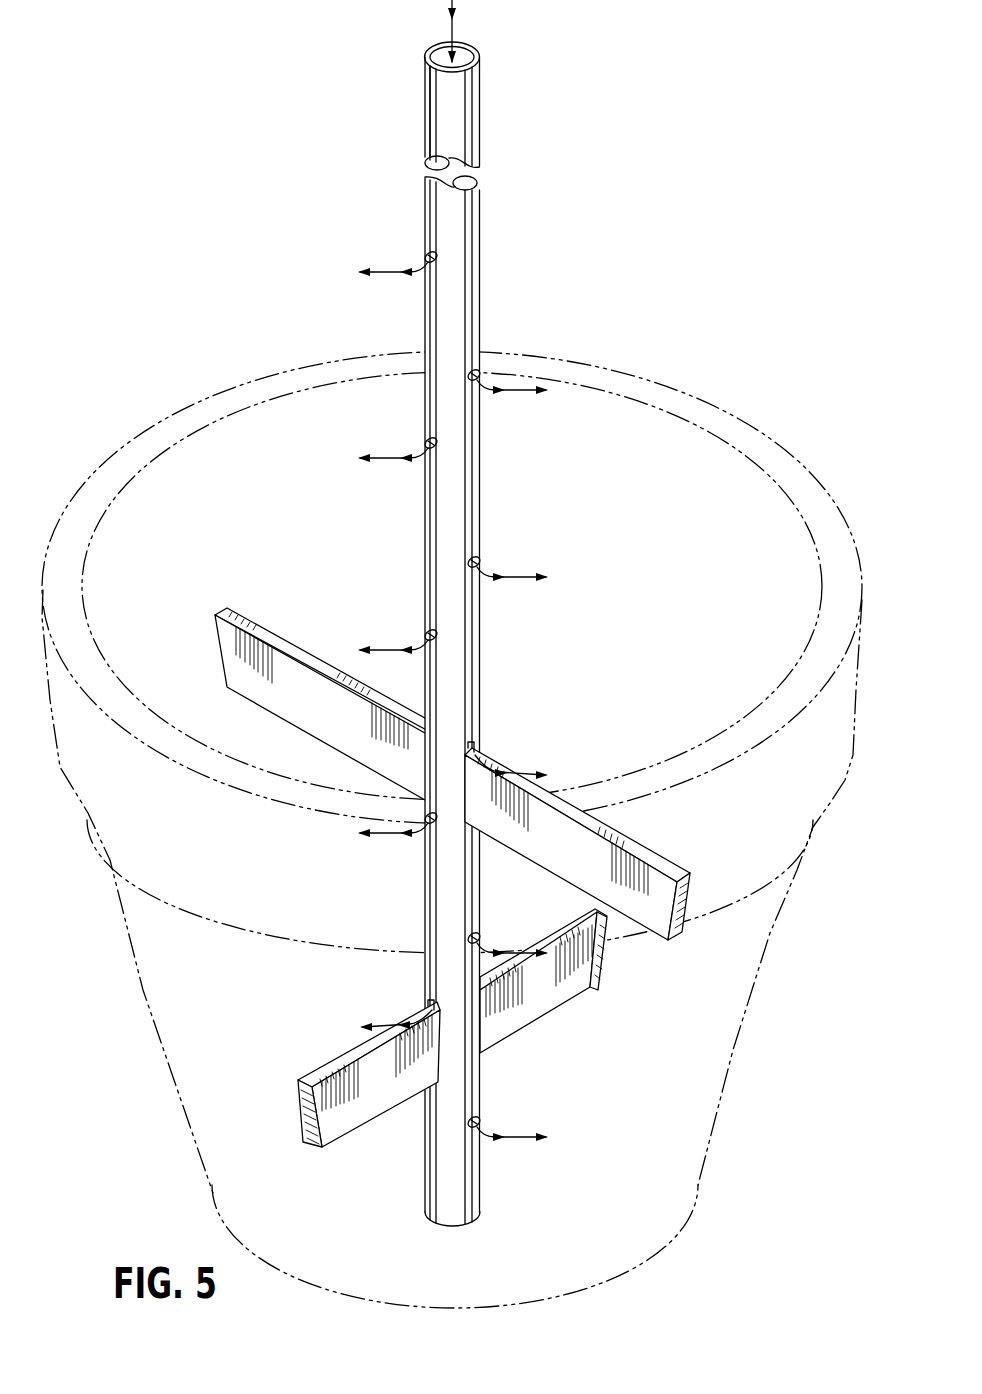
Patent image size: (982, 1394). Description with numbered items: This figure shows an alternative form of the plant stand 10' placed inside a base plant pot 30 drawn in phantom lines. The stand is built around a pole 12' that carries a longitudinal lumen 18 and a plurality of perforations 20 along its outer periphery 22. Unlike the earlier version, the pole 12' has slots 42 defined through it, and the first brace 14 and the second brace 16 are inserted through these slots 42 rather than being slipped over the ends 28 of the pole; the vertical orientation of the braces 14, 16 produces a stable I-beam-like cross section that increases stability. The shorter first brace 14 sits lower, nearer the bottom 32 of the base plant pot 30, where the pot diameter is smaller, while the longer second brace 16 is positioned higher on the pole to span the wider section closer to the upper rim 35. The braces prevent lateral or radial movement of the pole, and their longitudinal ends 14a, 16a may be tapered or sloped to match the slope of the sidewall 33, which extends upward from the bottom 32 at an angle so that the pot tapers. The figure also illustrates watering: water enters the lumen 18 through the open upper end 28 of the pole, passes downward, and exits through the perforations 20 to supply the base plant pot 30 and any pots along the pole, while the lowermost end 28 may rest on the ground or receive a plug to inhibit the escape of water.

The plant stand 10' is at (581, 637).
The pole 12' is at (485, 640).
The first brace 14 is at (330, 1062).
The longitudinal end of first brace 14a is at (604, 963).
The second brace 16 is at (622, 838).
The longitudinal end of second brace 16a is at (217, 648).
The lumen 18 is at (441, 50).
The perforations 20 is at (430, 251).
The outer periphery 22 is at (440, 329).
The ends of pole 28 is at (476, 48).
The base plant pot 30 is at (229, 386).
The bottom 32 is at (612, 1281).
The sidewall 33 is at (150, 1010).
The upper rim 35 is at (703, 393).
The slots 42 is at (475, 747).